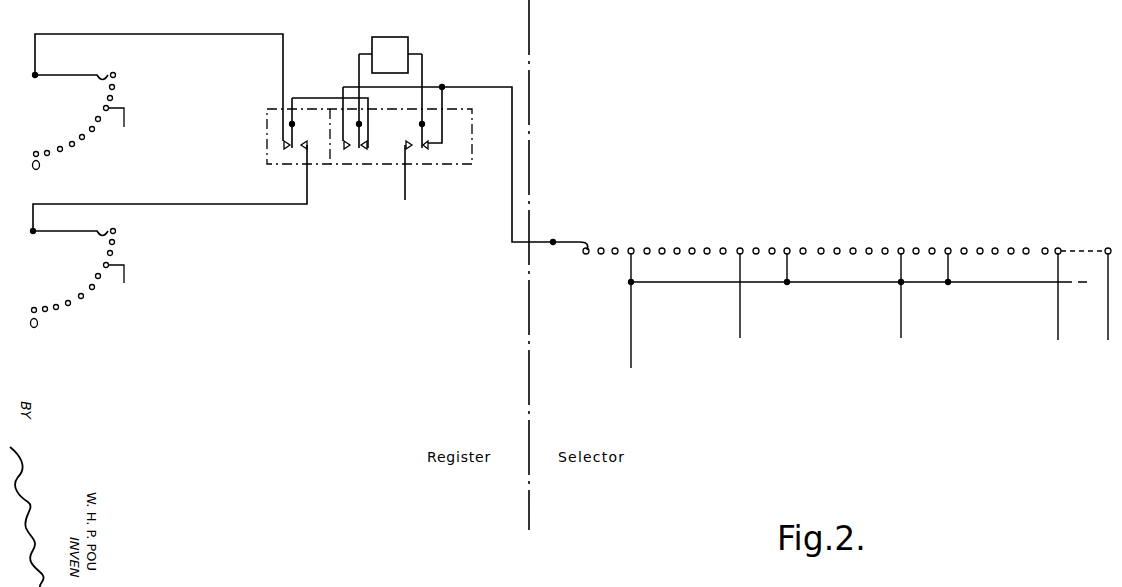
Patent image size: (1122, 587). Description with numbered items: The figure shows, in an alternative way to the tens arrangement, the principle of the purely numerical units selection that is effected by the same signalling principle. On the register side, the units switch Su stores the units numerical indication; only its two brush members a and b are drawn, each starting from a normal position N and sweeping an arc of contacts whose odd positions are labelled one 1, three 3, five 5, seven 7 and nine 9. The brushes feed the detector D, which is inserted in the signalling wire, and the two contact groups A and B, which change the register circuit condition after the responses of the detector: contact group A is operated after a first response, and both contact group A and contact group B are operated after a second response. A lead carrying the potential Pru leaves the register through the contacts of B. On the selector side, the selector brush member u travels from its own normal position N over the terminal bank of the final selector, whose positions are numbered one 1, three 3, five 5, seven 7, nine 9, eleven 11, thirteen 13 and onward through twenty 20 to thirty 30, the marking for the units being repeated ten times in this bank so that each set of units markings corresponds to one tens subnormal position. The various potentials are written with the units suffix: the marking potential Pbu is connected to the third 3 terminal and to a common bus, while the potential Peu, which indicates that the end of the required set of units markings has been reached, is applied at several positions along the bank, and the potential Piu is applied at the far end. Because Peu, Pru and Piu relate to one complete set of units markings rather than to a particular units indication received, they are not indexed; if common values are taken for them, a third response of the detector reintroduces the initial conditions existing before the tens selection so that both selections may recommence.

The units switch Su is at (71, 68).
The normal position N is at (350, 160).
The brush member a is at (73, 133).
The brush member b is at (72, 278).
The first contact position 1 is at (358, 167).
The third contact position 3 is at (370, 195).
The fifth contact position 5 is at (380, 209).
The seventh contact position 7 is at (383, 226).
The ninth contact position 9 is at (385, 239).
The eleventh contact position 11 is at (758, 242).
The thirteenth contact position 13 is at (795, 242).
The twentieth contact position 20 is at (909, 242).
The thirtieth contact position 30 is at (1058, 242).
The selector brush member u is at (831, 240).
The first contact group A is at (299, 123).
The second contact group B is at (394, 101).
The detector D is at (390, 55).
The units restart potential Pru is at (407, 183).
The units marking potential Pbu is at (632, 325).
The end-of-set potential Peu is at (898, 309).
The units interruption potential Piu is at (1102, 309).